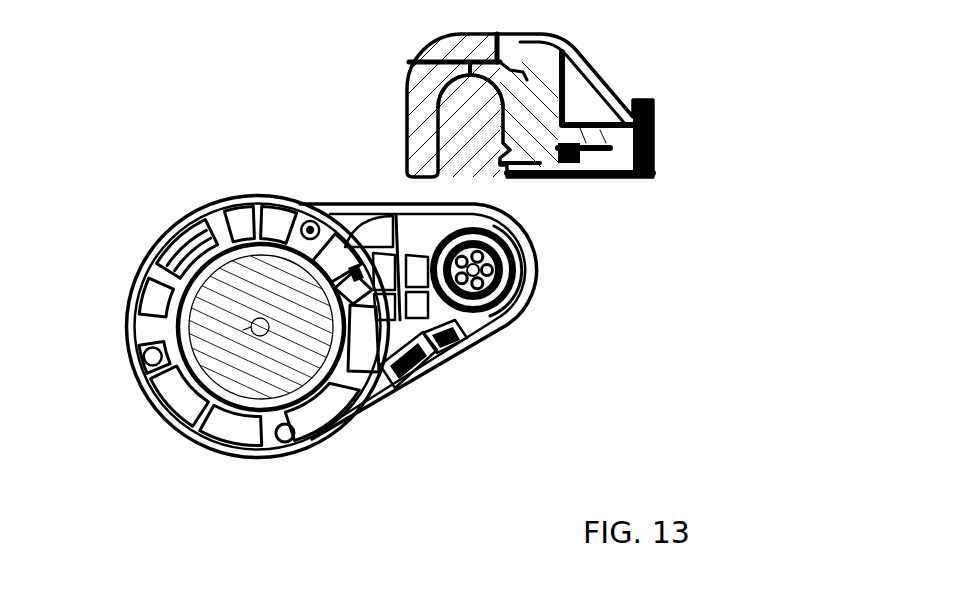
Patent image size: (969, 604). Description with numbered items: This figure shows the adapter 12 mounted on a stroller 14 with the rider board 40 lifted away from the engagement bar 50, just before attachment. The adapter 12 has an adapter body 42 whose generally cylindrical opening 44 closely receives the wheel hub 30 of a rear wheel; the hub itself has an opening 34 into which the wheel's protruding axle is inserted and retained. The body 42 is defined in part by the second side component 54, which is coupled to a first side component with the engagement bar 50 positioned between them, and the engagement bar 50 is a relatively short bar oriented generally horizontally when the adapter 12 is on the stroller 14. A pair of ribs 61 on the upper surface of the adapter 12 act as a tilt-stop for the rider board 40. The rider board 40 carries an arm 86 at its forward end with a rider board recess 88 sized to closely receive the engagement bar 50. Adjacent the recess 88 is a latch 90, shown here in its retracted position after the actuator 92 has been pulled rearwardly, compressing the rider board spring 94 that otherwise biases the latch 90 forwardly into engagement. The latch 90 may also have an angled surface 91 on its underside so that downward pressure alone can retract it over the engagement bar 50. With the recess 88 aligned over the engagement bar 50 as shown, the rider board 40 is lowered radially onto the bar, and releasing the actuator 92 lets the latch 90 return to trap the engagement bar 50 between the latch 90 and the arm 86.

The adapter 12 is at (340, 329).
The stroller 14 is at (260, 392).
The wheel hub 30 is at (170, 383).
The opening 34 is at (128, 322).
The adapter body 42 is at (214, 435).
The opening 44 is at (262, 246).
The engagement bar 50 is at (527, 310).
The second side component 54 is at (212, 205).
The ribs 61 is at (343, 203).
The arm 86 is at (562, 113).
The rider board recess 88 is at (480, 153).
The latch 90 is at (583, 60).
The angled surface 91 is at (528, 174).
The actuator 92 is at (613, 88).
The rider board spring 94 is at (655, 128).
The rider board 40 is at (604, 178).